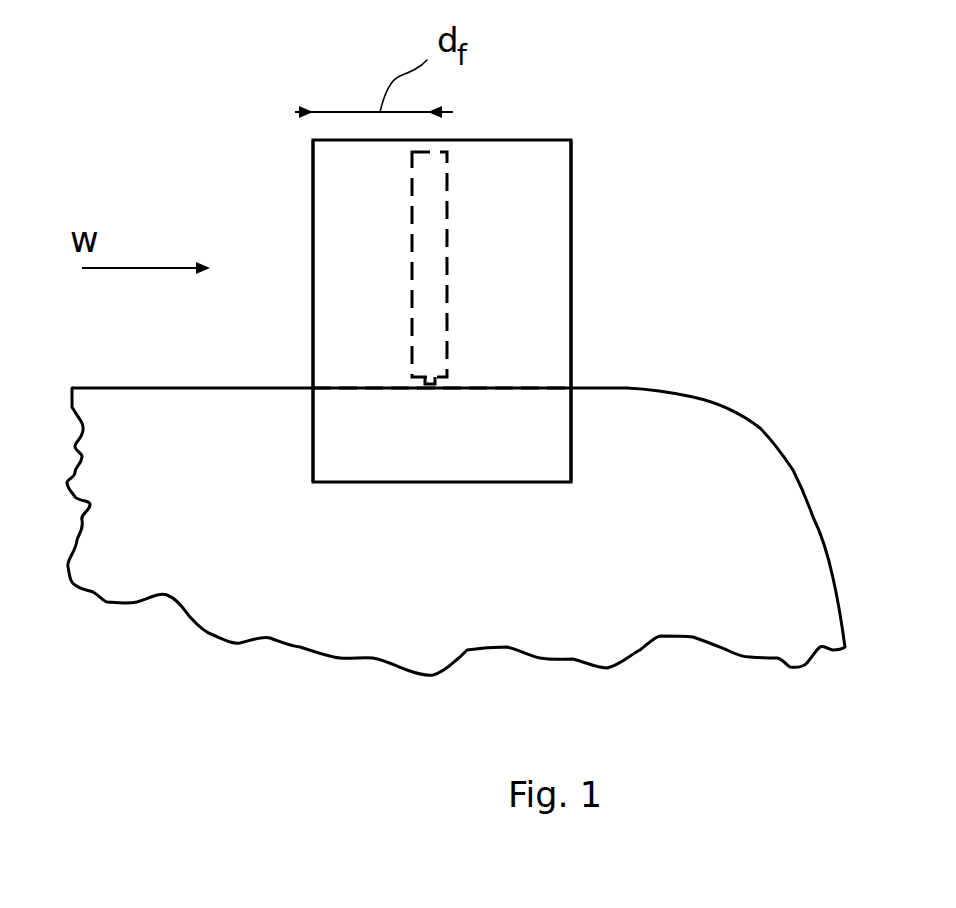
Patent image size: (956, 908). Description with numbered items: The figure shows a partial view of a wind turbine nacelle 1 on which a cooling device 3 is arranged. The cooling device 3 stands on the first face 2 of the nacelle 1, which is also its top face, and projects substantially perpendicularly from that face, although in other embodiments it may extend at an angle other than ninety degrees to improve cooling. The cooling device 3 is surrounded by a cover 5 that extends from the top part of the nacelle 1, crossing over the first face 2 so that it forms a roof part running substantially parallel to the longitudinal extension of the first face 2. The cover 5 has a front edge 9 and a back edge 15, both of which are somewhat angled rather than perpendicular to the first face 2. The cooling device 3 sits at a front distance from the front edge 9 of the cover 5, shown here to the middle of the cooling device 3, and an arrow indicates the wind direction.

The wind turbine nacelle 1 is at (752, 435).
The first face 2 is at (146, 386).
The cooling device 3 is at (432, 243).
The cover 5 is at (558, 167).
The front edge 9 is at (312, 164).
The back edge 15 is at (571, 332).